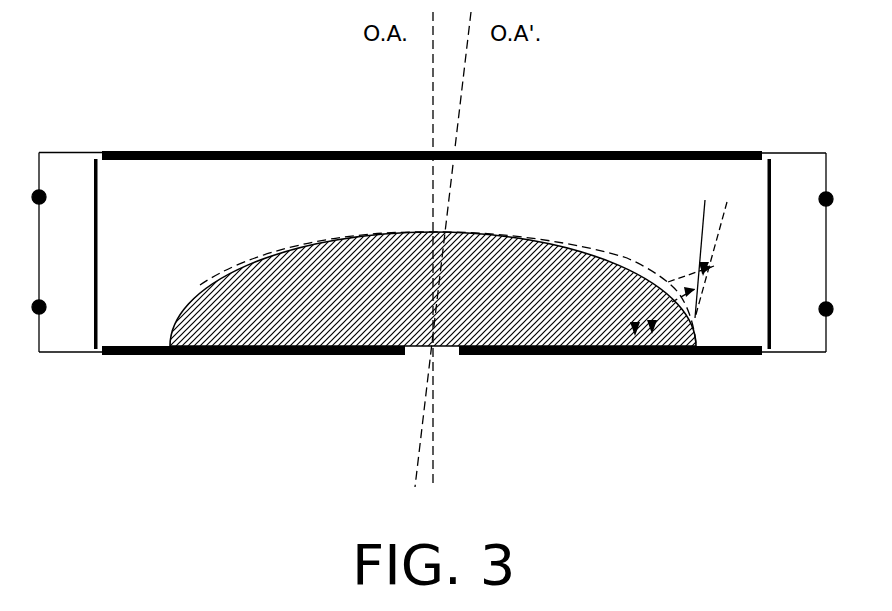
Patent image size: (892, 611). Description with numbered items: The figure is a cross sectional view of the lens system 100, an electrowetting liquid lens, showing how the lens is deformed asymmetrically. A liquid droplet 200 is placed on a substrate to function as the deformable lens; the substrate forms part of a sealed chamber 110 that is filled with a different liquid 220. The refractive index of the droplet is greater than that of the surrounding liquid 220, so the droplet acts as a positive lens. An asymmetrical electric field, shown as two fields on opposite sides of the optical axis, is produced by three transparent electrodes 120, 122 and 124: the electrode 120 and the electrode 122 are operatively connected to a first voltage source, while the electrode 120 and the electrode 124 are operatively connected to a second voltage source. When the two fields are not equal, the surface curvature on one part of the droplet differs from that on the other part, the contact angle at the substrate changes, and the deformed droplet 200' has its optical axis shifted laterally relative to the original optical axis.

The lens system 100 is at (306, 96).
The sealed chamber 110 is at (772, 208).
The electrode 120 is at (322, 151).
The electrode 122 is at (143, 355).
The electrode 124 is at (730, 355).
The liquid droplet 200 is at (433, 212).
The deformed liquid droplet 200' is at (478, 214).
The liquid 220 is at (170, 215).